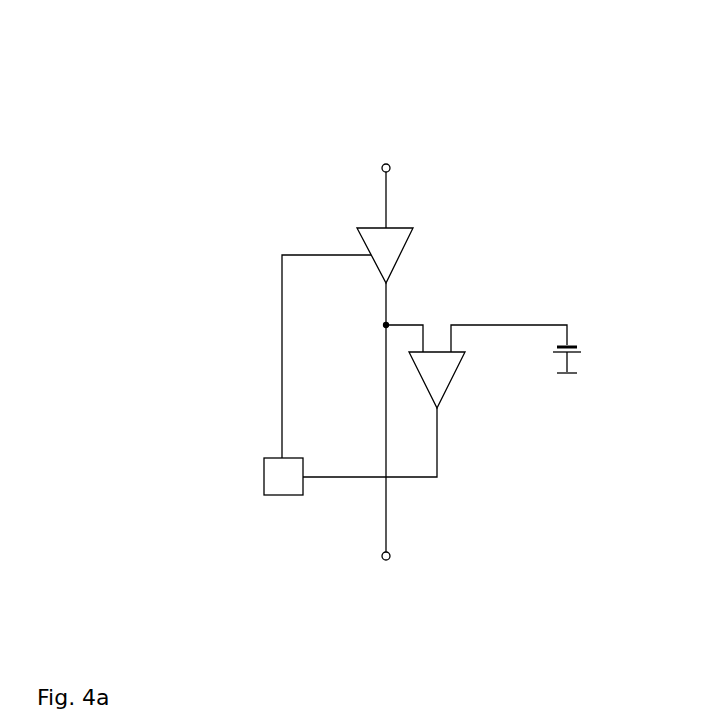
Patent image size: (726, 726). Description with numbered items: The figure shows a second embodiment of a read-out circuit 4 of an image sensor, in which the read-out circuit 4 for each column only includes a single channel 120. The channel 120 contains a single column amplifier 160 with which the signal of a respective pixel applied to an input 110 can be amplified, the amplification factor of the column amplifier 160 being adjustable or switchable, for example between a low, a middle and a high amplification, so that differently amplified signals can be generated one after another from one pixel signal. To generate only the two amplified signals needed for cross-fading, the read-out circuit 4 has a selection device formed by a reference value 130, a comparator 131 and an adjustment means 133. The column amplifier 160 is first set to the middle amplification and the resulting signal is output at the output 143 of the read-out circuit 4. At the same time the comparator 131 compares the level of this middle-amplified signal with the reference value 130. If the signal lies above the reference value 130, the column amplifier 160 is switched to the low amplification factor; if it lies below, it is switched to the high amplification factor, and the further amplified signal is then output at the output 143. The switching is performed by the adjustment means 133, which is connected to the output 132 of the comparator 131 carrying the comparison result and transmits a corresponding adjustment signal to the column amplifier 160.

The read-out circuit 4 is at (201, 113).
The input 110 is at (383, 157).
The channel 120 is at (487, 178).
The reference value 130 is at (581, 358).
The comparator 131 is at (461, 380).
The output of the comparator 132 is at (440, 480).
The adjustment means 133 is at (262, 477).
The output 143 is at (384, 566).
The column amplifier 160 is at (354, 222).